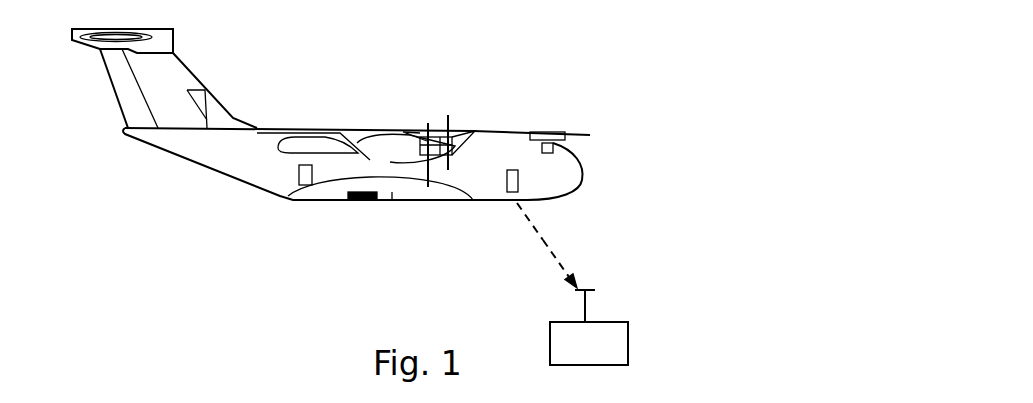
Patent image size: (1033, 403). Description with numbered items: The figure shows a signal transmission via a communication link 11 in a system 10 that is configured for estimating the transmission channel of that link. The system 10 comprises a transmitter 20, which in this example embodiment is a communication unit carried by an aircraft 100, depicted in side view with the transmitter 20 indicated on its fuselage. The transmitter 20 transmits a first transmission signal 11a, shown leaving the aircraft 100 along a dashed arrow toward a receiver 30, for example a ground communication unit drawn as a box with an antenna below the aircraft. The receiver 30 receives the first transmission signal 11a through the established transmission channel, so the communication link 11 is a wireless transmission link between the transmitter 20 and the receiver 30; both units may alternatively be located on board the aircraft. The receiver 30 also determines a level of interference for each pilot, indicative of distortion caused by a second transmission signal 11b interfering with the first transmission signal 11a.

The aircraft 100 is at (418, 108).
The system 10 is at (645, 88).
The transmitter 20 is at (490, 148).
The communication link 11 is at (659, 234).
The first transmission signal 11a is at (530, 221).
The second transmission signal 11b is at (552, 243).
The receiver 30 is at (610, 347).